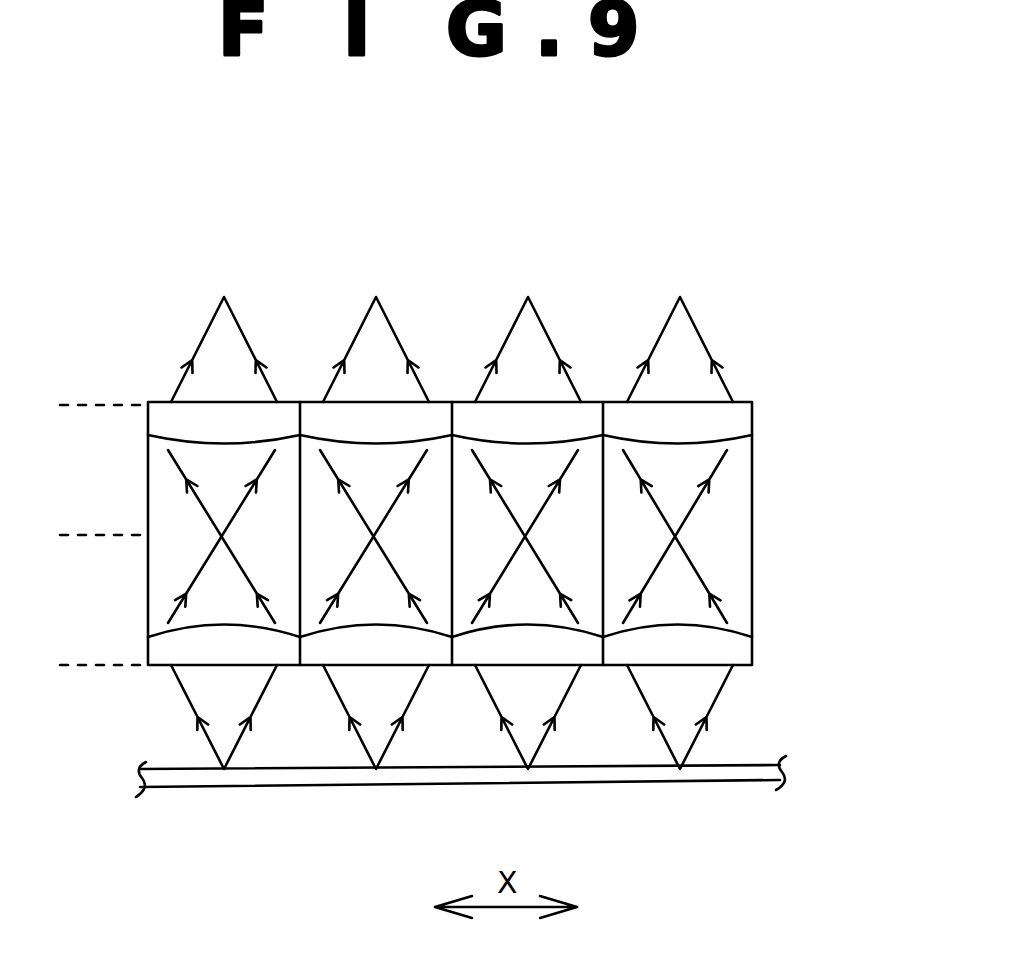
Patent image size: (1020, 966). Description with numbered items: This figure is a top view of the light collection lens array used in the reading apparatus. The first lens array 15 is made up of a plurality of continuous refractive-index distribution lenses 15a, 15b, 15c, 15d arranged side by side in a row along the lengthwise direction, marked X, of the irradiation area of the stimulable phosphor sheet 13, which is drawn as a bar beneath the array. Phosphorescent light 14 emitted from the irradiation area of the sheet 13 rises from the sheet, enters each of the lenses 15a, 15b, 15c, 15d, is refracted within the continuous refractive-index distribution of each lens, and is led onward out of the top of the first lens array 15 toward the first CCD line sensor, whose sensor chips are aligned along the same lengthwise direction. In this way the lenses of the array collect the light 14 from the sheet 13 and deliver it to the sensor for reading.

The stimulable phosphor sheet 13 is at (716, 785).
The phosphorescent light 14 is at (718, 692).
The first lens array 15 is at (124, 418).
The continuous refractive-index distribution lens 15a is at (728, 416).
The continuous refractive-index distribution lens 15b is at (577, 418).
The continuous refractive-index distribution lens 15c is at (432, 417).
The continuous refractive-index distribution lens 15d is at (287, 417).